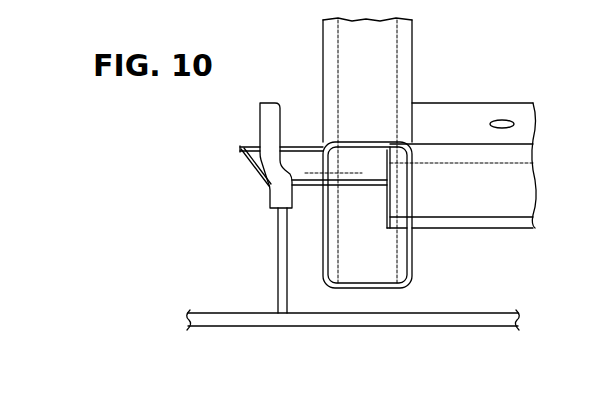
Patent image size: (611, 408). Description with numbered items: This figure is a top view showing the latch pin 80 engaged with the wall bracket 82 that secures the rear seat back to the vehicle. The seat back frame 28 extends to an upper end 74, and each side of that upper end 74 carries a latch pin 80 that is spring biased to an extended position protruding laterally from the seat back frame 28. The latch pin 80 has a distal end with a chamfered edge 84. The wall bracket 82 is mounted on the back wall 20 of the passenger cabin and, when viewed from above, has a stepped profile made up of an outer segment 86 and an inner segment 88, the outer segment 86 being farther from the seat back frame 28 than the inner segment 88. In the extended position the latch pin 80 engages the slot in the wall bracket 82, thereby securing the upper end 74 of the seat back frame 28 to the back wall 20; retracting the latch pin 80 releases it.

The back wall 20 is at (425, 326).
The seat back frame 28 is at (388, 56).
The upper end 74 is at (487, 195).
The latch pin 80 is at (298, 157).
The wall bracket 82 is at (278, 273).
The chamfered edge 84 is at (242, 151).
The outer segment 86 is at (262, 122).
The inner segment 88 is at (277, 188).